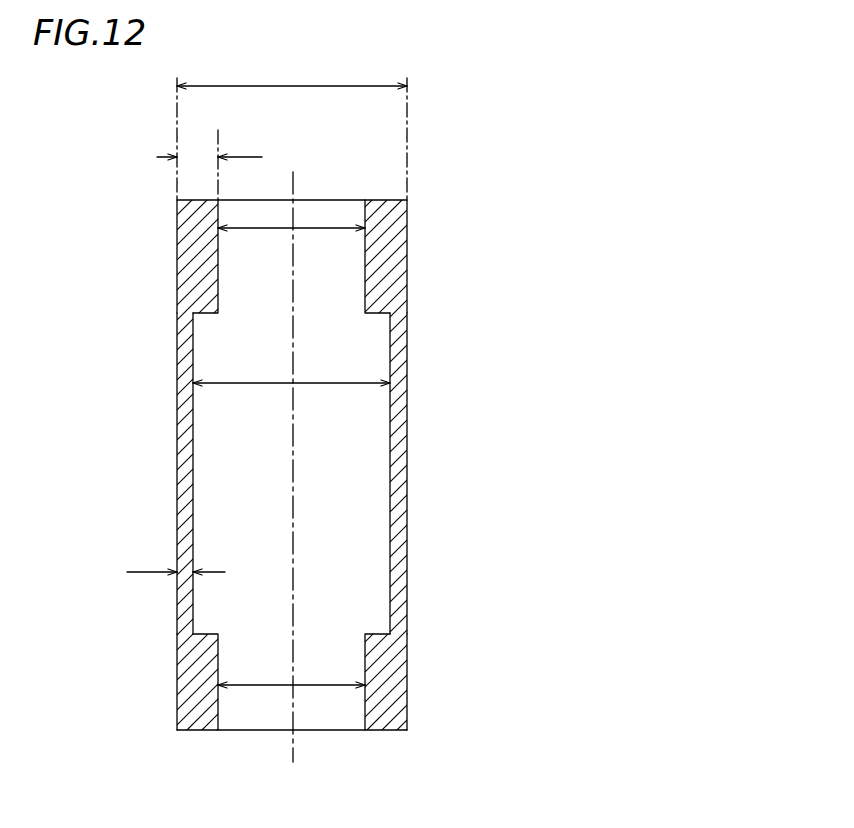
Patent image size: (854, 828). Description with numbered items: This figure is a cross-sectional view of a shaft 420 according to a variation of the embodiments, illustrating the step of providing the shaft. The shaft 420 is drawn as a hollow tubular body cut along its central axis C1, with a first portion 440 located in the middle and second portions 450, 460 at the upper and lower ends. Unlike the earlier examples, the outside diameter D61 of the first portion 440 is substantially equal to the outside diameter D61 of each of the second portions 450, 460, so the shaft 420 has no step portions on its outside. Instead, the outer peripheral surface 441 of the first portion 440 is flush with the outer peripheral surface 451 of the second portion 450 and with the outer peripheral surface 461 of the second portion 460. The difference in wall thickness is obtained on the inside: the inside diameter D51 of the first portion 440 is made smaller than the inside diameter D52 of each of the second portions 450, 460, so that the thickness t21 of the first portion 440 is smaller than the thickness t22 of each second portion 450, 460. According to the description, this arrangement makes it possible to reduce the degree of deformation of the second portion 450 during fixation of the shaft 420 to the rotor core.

The shaft 420 is at (432, 215).
The first portion 440 is at (182, 513).
The outer peripheral surface 441 is at (177, 408).
The second portion 450 is at (240, 260).
The outer peripheral surface 451 is at (176, 227).
The second portion 460 is at (219, 668).
The outer peripheral surface 461 is at (180, 705).
The central axis C1 is at (294, 453).
The outside diameter D61 is at (292, 74).
The inside diameter D52 is at (291, 445).
The inside diameter D51 is at (291, 369).
The thickness t21 is at (176, 558).
The thickness t22 is at (212, 145).